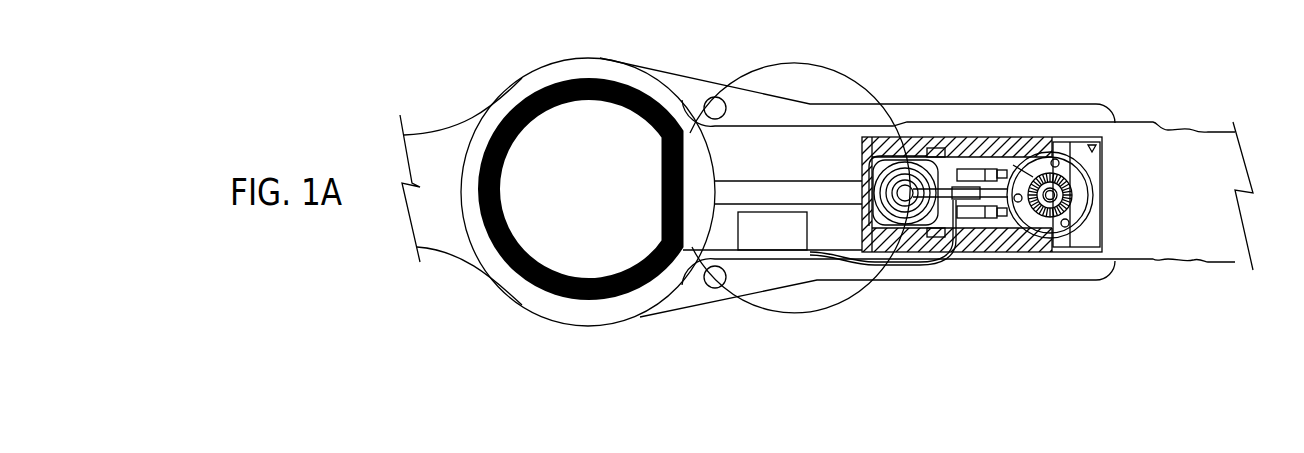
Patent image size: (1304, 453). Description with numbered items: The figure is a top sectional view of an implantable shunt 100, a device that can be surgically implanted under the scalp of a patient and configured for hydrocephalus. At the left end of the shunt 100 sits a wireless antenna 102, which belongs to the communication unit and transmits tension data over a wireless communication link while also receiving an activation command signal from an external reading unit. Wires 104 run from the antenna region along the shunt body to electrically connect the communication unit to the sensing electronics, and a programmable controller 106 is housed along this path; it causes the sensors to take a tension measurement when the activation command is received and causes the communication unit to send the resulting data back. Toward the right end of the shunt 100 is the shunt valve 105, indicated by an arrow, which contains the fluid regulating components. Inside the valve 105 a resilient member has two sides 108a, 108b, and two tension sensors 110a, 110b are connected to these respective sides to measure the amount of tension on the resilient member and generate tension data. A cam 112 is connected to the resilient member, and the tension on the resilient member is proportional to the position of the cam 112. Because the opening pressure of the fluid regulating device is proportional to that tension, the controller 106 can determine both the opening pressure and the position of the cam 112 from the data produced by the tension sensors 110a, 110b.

The implantable shunt 100 is at (451, 52).
The wireless antenna 102 is at (590, 303).
The wires 104 is at (717, 252).
The shunt valve 105 is at (1112, 192).
The programmable controller 106 is at (775, 212).
The first side of resilient member 108a is at (1003, 168).
The second side of resilient member 108b is at (1003, 218).
The first tension sensor 110a is at (983, 169).
The second tension sensor 110b is at (985, 219).
The cam 112 is at (1087, 158).